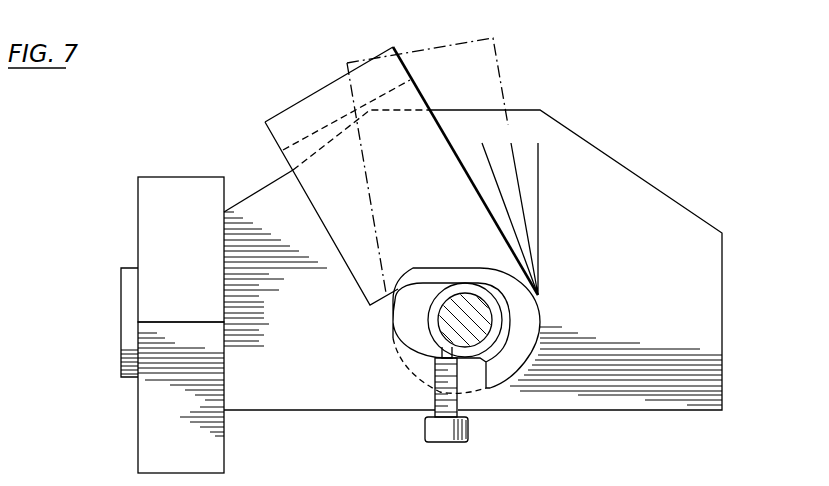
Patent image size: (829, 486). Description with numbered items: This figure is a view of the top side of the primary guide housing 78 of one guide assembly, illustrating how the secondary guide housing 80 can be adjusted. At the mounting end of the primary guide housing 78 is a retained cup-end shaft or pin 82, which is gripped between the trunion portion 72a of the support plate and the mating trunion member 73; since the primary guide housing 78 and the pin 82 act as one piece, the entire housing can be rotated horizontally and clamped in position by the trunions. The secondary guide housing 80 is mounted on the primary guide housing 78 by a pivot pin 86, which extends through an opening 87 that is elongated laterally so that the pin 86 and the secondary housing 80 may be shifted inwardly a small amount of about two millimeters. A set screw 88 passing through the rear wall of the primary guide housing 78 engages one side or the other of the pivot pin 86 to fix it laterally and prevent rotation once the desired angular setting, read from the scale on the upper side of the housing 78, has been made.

The primary guide housing 78 is at (645, 182).
The secondary guide housing 80 is at (283, 112).
The trunion portion 72a is at (148, 209).
The trunion member 73 is at (143, 403).
The cup-end shaft or pin 82 is at (127, 304).
The pivot pin 86 is at (487, 323).
The opening 87 is at (397, 320).
The set screw 88 is at (428, 431).